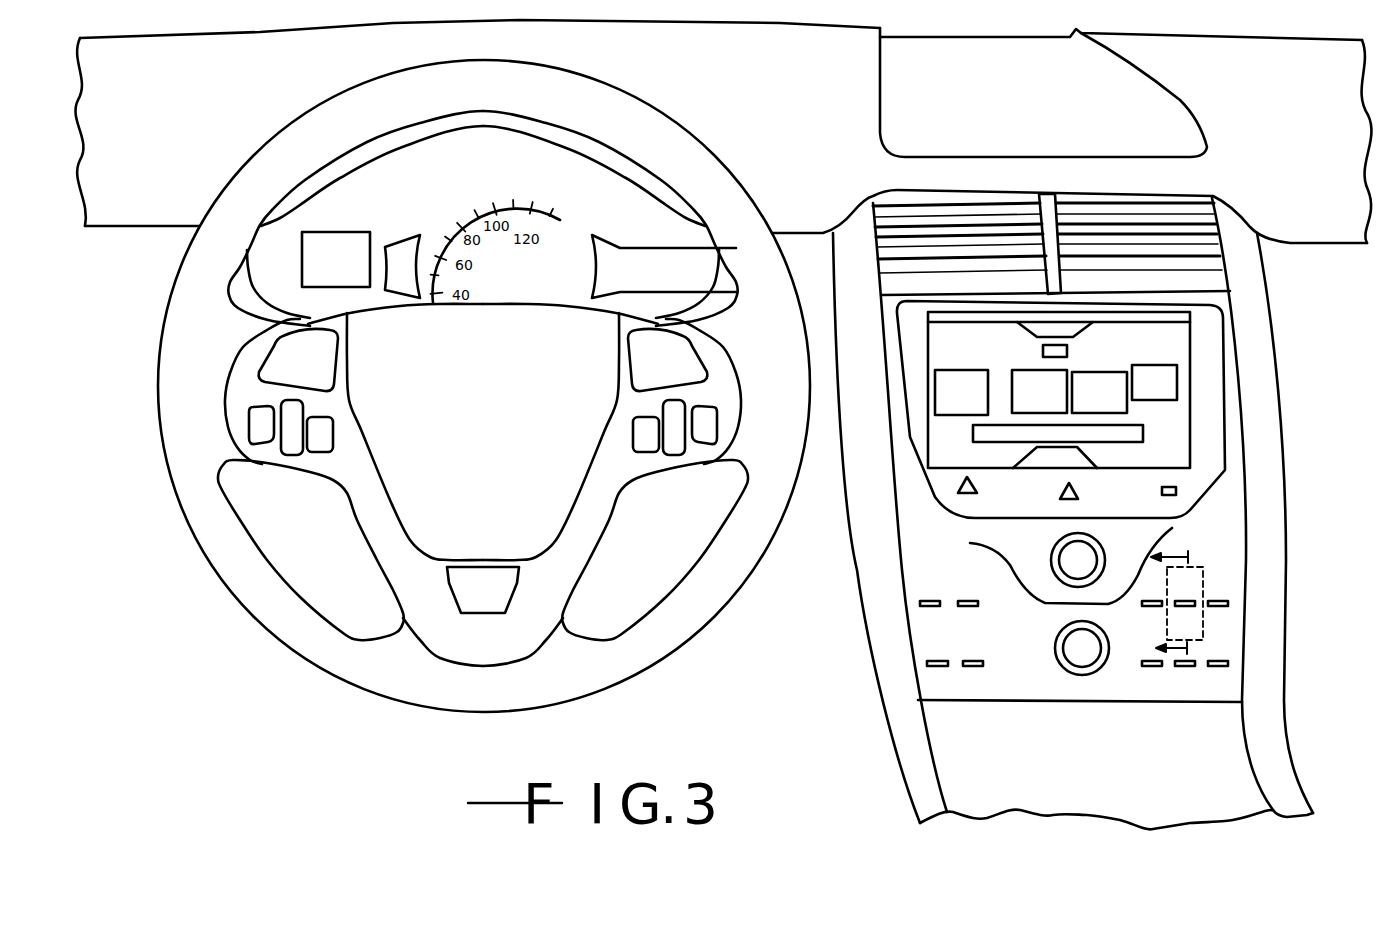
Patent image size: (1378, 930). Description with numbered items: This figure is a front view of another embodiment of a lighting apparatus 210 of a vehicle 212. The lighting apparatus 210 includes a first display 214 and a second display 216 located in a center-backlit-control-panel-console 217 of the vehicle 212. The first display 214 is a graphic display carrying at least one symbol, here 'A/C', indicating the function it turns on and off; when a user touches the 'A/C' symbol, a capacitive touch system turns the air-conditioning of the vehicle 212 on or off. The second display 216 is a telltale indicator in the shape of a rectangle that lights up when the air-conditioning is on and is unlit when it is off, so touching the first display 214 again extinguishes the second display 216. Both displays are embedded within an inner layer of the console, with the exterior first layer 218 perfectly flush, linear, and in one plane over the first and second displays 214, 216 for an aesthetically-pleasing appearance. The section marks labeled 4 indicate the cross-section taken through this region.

The lighting apparatus 210 is at (1212, 576).
The vehicle 212 is at (1289, 270).
The first display 214 is at (1193, 568).
The second display 216 is at (1192, 610).
The center-backlit-control-panel-console 217 is at (928, 533).
The exterior first layer 218 is at (1193, 627).
The section line 4 is at (1164, 598).